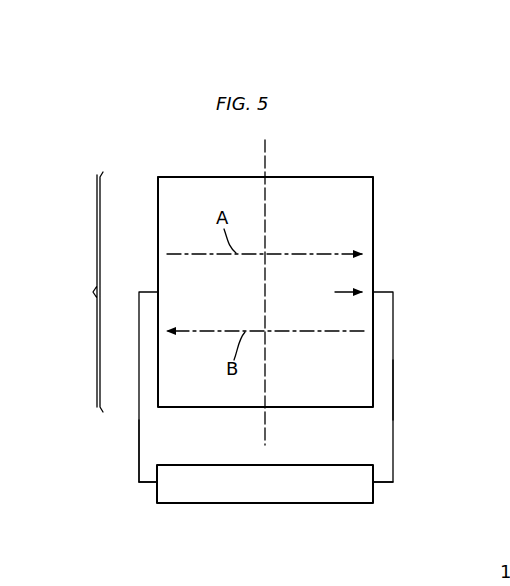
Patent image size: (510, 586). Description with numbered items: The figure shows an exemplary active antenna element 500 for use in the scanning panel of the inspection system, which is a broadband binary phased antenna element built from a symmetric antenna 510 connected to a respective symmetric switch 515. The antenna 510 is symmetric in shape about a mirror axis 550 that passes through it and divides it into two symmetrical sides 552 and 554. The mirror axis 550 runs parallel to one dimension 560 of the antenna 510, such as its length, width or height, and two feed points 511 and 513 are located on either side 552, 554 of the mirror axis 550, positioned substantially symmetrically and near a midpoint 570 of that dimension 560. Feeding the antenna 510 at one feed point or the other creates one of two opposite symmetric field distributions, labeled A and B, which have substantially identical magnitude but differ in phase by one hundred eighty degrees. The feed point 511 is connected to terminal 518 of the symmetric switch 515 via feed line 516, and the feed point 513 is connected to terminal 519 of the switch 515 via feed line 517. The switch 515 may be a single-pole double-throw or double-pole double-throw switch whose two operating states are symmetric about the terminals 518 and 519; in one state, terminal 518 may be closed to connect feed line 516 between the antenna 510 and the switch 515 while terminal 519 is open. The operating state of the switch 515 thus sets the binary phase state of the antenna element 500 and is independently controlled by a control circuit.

The active antenna element 500 is at (140, 124).
The symmetric antenna 510 is at (374, 213).
The feed point 511 is at (155, 291).
The feed point 513 is at (377, 290).
The symmetric switch 515 is at (315, 504).
The feed line 516 is at (138, 444).
The feed line 517 is at (395, 386).
The terminal 518 is at (155, 490).
The terminal 519 is at (375, 490).
The mirror axis 550 is at (261, 423).
The symmetrical side 552 is at (206, 177).
The symmetrical side 554 is at (330, 177).
The dimension 560 is at (75, 292).
The midpoint 570 is at (335, 292).